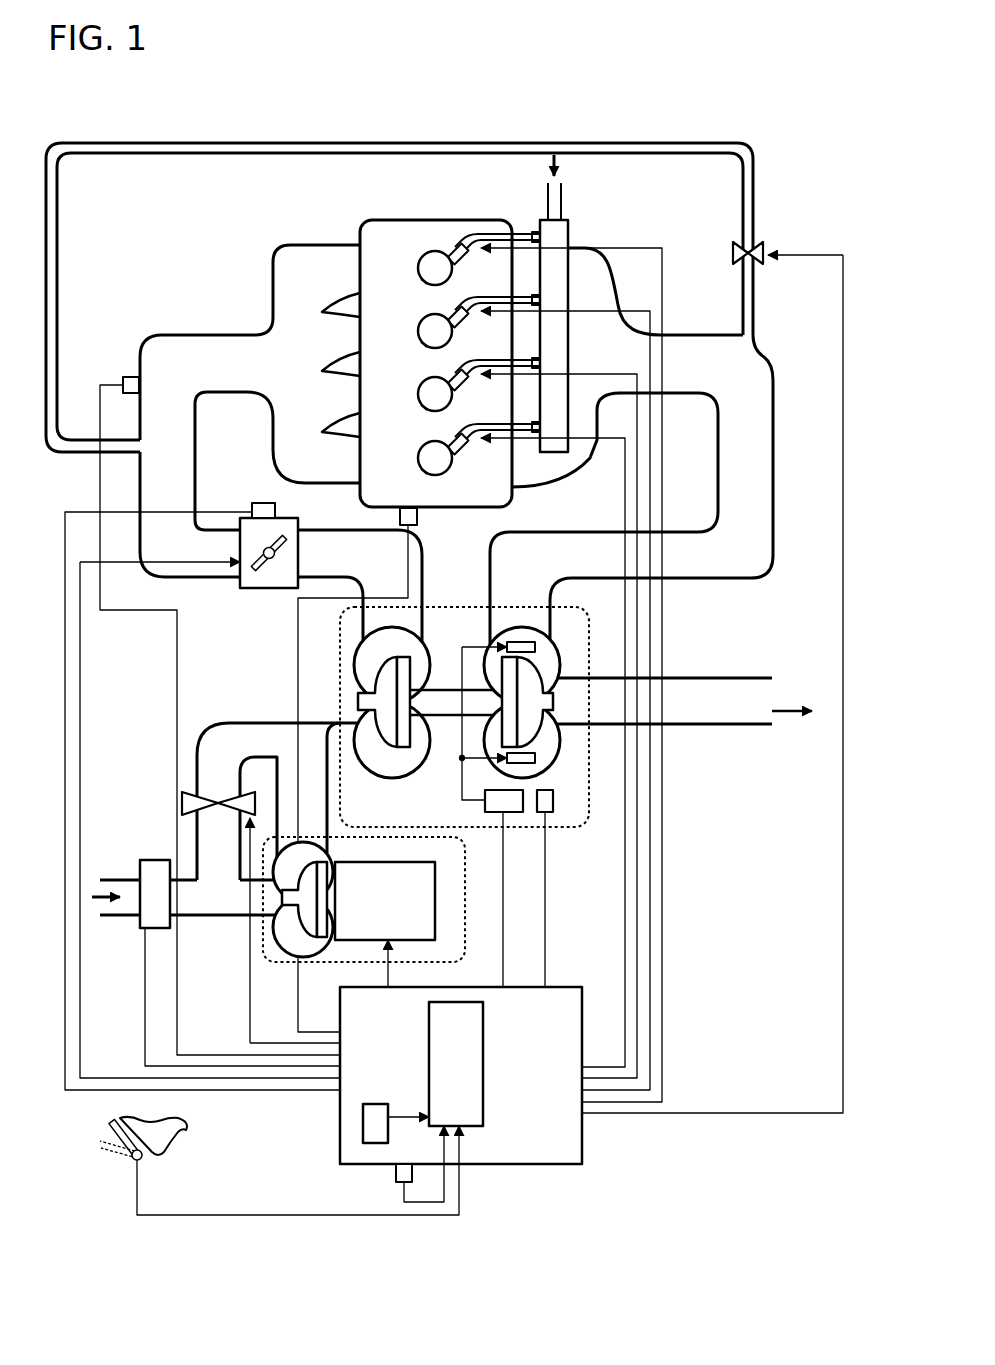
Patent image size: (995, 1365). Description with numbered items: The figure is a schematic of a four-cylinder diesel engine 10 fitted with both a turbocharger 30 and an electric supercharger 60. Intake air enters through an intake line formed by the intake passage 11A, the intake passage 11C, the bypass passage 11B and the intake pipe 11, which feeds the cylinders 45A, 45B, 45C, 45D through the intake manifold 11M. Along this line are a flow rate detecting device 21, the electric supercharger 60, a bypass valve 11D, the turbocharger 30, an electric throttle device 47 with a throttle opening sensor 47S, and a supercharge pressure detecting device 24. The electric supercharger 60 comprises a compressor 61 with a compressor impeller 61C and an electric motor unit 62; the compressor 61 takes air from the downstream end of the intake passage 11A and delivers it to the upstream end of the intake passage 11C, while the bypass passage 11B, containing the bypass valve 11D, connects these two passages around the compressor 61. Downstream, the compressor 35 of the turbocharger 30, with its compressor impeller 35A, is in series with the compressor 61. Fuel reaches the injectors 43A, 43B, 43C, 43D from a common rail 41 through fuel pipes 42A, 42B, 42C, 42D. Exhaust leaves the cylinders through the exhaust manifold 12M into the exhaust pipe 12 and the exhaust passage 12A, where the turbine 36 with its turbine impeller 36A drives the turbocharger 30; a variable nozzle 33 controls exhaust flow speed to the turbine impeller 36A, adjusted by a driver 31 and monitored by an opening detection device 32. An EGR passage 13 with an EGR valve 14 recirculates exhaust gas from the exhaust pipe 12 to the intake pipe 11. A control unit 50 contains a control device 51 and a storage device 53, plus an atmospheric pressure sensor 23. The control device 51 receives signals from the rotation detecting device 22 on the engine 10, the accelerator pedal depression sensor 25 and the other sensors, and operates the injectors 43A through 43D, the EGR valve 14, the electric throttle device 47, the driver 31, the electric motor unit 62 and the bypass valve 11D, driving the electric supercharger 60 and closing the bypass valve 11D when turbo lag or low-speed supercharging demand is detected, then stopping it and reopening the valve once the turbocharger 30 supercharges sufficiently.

The engine 10 is at (356, 228).
The intake pipe 11 is at (168, 332).
The intake manifold 11M is at (283, 273).
The intake passage 11A is at (185, 925).
The bypass passage 11B is at (196, 755).
The intake passage 11C is at (334, 828).
The bypass valve 11D is at (185, 793).
The exhaust pipe 12 is at (688, 333).
The exhaust manifold 12M is at (554, 488).
The exhaust passage 12A is at (757, 675).
The EGR passage 13 is at (738, 290).
The EGR valve 14 is at (757, 247).
The flow rate detecting device 21 is at (158, 858).
The rotation detecting device 22 is at (397, 519).
The atmospheric pressure sensor 23 is at (393, 1175).
The supercharge pressure detecting device 24 is at (128, 376).
The accelerator pedal depression sensor 25 is at (127, 1166).
The turbocharger 30 is at (446, 605).
The driver 31 is at (527, 788).
The opening detection device 32 is at (556, 801).
The variable nozzle 33 is at (540, 646).
The compressor 35 is at (352, 756).
The compressor impeller 35A is at (355, 703).
The turbine 36 is at (562, 656).
The turbine impeller 36A is at (557, 700).
The common rail 41 is at (573, 240).
The fuel pipe 42A is at (478, 233).
The fuel pipe 42B is at (473, 294).
The fuel pipe 42C is at (473, 357).
The fuel pipe 42D is at (473, 421).
The injector 43A is at (440, 262).
The injector 43B is at (440, 325).
The injector 43C is at (440, 388).
The injector 43D is at (440, 452).
The cylinder 45A is at (426, 286).
The cylinder 45B is at (426, 349).
The cylinder 45C is at (426, 412).
The cylinder 45D is at (428, 476).
The electric throttle device 47 is at (291, 518).
The throttle opening sensor 47S is at (247, 503).
The control unit 50 is at (338, 1122).
The control device 51 is at (485, 1130).
The storage device 53 is at (362, 1130).
The electric supercharger 60 is at (468, 890).
The compressor 61 is at (312, 958).
The compressor impeller 61C is at (288, 907).
The electric motor unit 62 is at (408, 945).